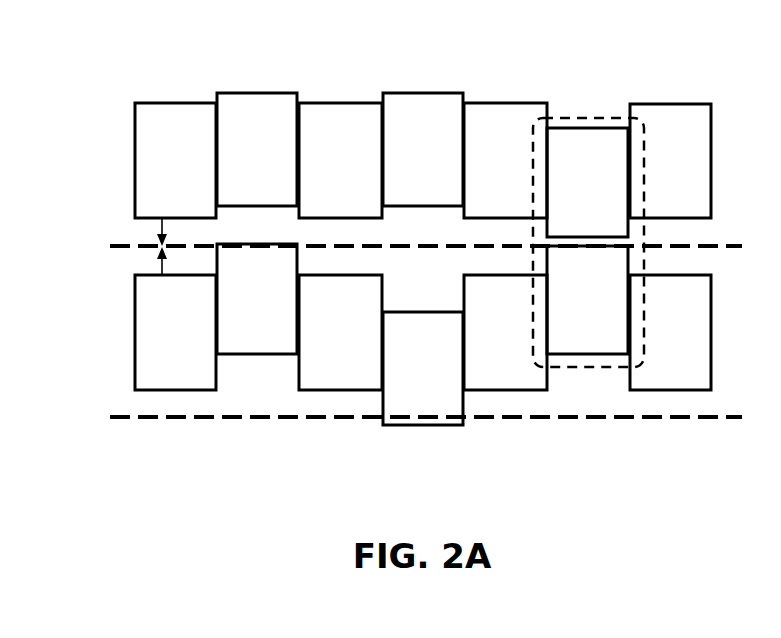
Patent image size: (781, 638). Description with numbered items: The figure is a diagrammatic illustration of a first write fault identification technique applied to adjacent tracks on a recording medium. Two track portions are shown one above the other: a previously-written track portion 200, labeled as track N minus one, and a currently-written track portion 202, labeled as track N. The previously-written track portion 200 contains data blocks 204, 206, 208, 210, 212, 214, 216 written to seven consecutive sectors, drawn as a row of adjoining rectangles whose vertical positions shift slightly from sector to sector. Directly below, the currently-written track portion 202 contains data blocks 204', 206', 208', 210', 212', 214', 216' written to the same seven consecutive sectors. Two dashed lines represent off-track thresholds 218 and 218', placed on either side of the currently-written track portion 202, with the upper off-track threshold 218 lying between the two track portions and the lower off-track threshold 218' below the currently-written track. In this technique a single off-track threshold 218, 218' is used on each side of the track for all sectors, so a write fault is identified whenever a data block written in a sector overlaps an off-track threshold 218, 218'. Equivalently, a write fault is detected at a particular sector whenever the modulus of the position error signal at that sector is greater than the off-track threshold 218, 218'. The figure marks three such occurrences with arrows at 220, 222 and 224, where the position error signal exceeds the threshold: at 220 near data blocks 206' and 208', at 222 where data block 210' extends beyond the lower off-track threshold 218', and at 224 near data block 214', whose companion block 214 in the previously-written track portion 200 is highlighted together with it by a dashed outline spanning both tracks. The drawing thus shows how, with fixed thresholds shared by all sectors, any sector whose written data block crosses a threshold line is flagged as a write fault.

The previously-written track portion 200 is at (119, 112).
The currently-written track portion 202 is at (119, 279).
The data block 204 is at (170, 139).
The data block 206 is at (255, 131).
The data block 208 is at (338, 139).
The data block 210 is at (423, 131).
The data block 212 is at (505, 139).
The data block 214 is at (587, 161).
The data block 216 is at (670, 141).
The off-track threshold 218 is at (436, 218).
The data block 204' is at (175, 368).
The data block 206' is at (257, 350).
The data block 208' is at (340, 366).
The data block 210' is at (423, 385).
The data block 212' is at (505, 367).
The data block 214' is at (587, 351).
The data block 216' is at (673, 367).
The off-track threshold 218' is at (445, 441).
The write fault location 220 is at (266, 371).
The write fault location 222 is at (437, 434).
The write fault location 224 is at (606, 377).